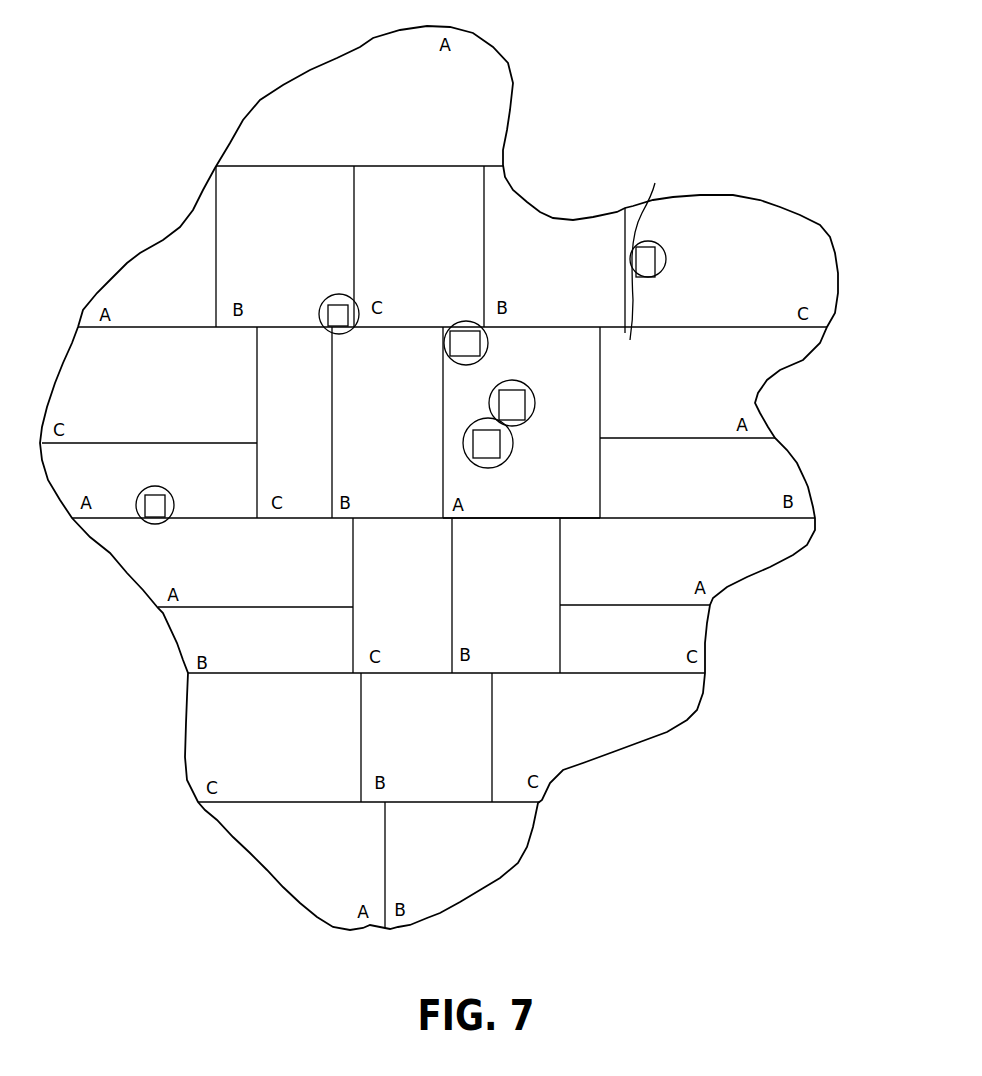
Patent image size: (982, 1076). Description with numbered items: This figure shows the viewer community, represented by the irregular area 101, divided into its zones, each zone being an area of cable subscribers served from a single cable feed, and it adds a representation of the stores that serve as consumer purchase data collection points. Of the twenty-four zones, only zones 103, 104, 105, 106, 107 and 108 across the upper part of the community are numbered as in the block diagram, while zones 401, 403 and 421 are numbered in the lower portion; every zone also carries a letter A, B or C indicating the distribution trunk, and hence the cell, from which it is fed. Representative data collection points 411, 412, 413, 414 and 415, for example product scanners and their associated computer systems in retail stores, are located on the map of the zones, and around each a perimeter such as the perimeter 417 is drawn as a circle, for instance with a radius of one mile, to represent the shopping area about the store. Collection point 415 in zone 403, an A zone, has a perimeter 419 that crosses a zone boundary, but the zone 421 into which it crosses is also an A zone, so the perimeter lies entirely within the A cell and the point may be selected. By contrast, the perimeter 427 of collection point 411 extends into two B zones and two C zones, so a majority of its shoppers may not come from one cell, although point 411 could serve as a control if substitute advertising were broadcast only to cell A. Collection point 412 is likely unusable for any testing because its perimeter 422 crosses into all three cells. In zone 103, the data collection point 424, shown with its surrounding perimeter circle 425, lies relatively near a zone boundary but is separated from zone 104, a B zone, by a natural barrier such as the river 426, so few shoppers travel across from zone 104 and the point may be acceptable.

The irregular area 101 is at (840, 257).
The zone 103 is at (765, 295).
The zone 104 is at (543, 250).
The zone 105 is at (388, 198).
The zone 106 is at (427, 92).
The zone 107 is at (263, 208).
The zone 108 is at (157, 278).
The die 401 is at (532, 362).
The zone 403 is at (62, 472).
The data collection point 411 is at (341, 300).
The data collection point 412 is at (465, 330).
The data collection point 413 is at (526, 400).
The data collection point 414 is at (500, 442).
The data collection point 415 is at (167, 503).
The perimeter 417 is at (487, 467).
The perimeter 419 is at (150, 487).
The zone 421 is at (268, 550).
The perimeter 422 is at (442, 341).
The data collection point 424 is at (648, 278).
The defect region 425 is at (665, 255).
The river 426 is at (649, 251).
The perimeter 427 is at (322, 324).